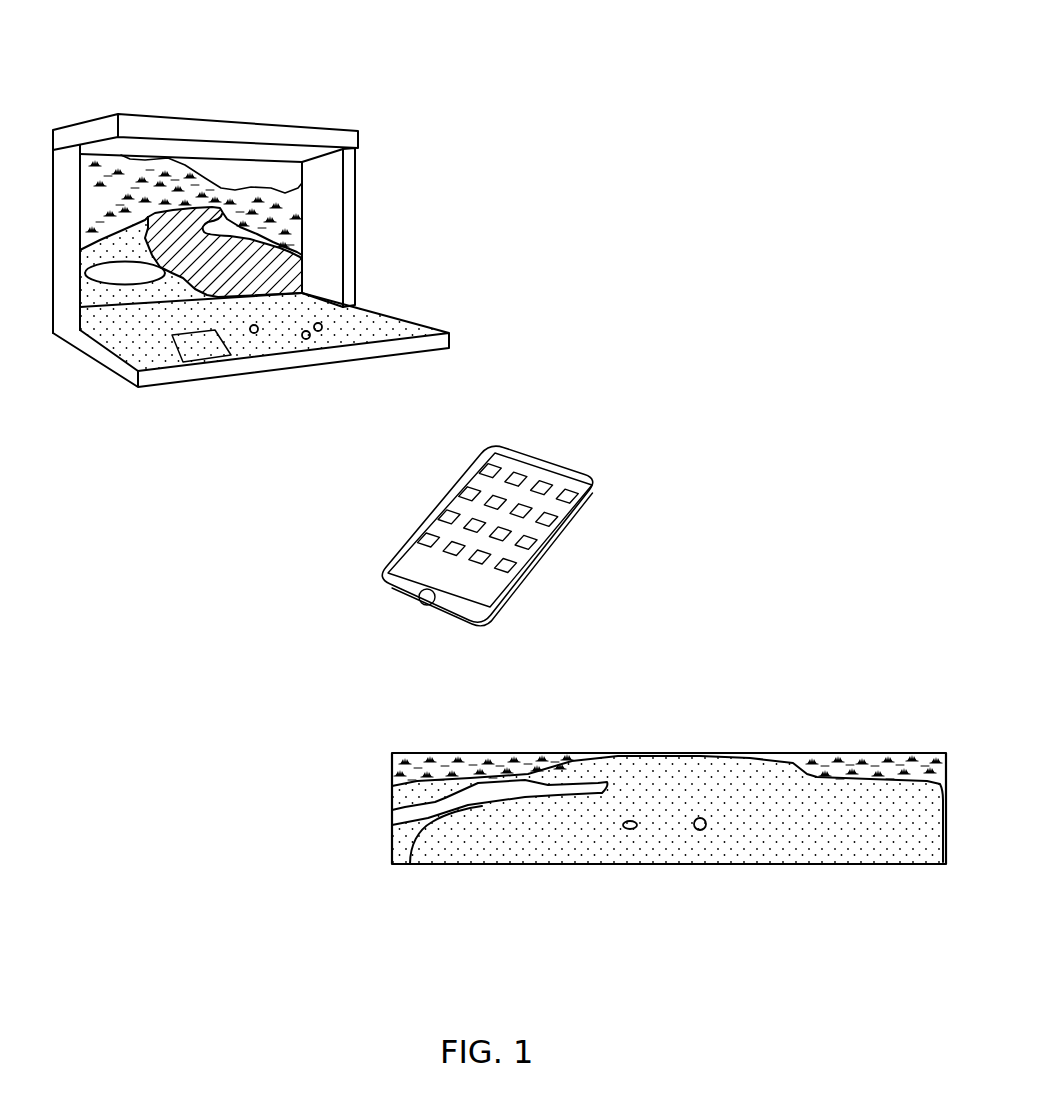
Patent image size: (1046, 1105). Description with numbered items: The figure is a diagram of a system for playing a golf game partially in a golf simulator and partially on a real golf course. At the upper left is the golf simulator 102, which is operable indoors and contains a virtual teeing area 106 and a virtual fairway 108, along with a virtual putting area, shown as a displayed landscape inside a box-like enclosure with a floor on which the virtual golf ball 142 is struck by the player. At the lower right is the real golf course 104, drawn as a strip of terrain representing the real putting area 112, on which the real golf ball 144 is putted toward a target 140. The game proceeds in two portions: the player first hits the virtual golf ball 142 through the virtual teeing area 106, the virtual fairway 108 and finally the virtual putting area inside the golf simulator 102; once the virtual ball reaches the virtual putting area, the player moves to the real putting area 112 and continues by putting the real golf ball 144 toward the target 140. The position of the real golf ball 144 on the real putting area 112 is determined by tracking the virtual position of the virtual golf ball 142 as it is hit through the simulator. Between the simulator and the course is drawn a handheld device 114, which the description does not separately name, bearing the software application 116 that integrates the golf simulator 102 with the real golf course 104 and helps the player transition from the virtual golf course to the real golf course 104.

The golf simulator 102 is at (408, 105).
The real golf course 104 is at (330, 793).
The virtual teeing area 106 is at (185, 349).
The virtual fairway 108 is at (187, 250).
The real putting area 112 is at (657, 788).
The mobile device 114 is at (682, 420).
The software application 116 is at (523, 552).
The target 140 is at (628, 830).
The virtual golf ball 142 is at (254, 333).
The real golf ball 144 is at (701, 831).